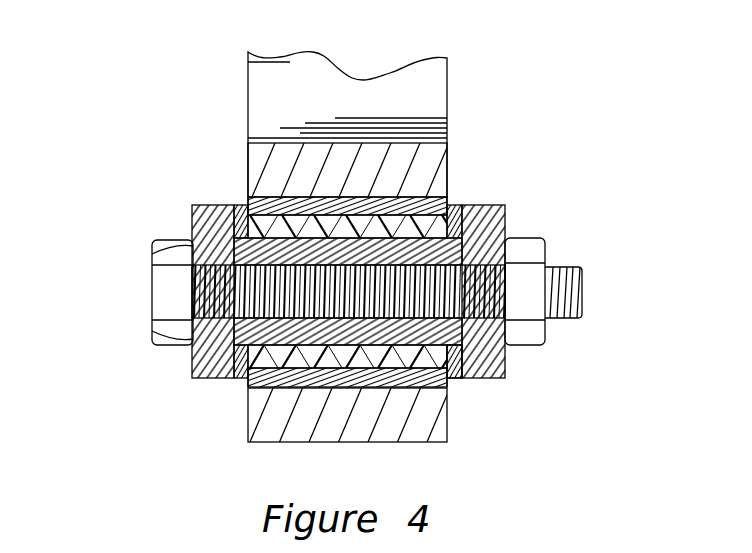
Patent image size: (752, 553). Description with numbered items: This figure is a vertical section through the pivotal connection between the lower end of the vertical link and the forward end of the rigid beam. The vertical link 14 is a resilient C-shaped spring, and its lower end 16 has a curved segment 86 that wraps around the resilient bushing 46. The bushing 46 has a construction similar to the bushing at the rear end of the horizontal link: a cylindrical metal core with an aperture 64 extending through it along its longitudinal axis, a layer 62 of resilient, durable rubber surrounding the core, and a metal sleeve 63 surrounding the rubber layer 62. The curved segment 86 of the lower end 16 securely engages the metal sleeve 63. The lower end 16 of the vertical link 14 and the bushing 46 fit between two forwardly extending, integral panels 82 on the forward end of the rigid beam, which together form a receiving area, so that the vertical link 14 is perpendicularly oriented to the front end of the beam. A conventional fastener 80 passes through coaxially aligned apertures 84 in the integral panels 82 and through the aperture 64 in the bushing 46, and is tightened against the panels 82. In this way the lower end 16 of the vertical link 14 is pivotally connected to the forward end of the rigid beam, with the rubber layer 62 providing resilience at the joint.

The vertical link 14 is at (433, 88).
The lower end 16 is at (183, 135).
The resilient bushing 46 is at (462, 362).
The layer of resilient, durable rubber 62 is at (290, 225).
The metal sleeve 63 is at (303, 208).
The aperture 64 is at (153, 258).
The fastener 80 is at (152, 318).
The integral panels 82 is at (198, 370).
The apertures 84 is at (200, 313).
The curved segment 86 is at (430, 162).